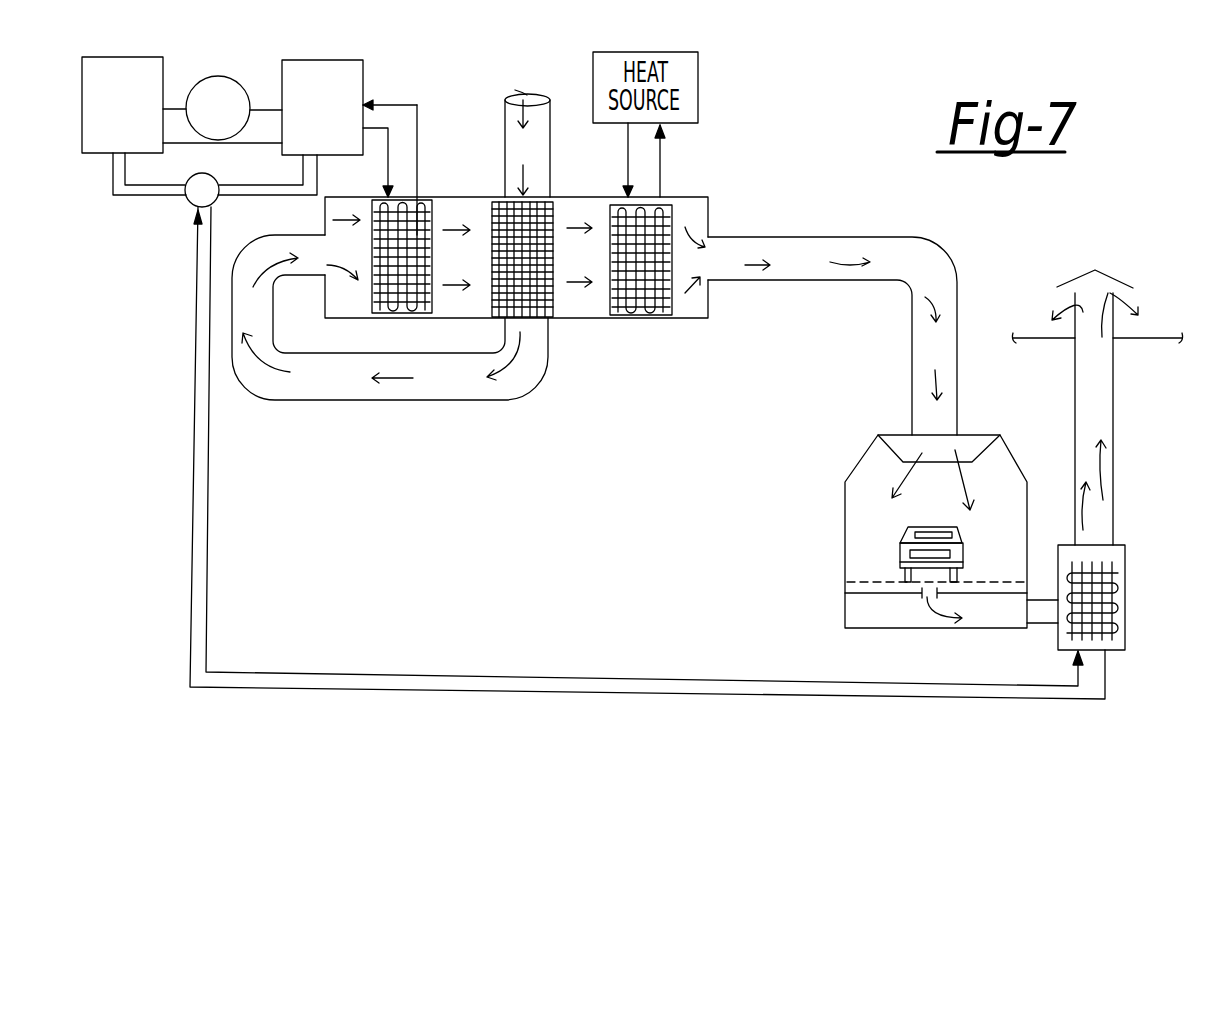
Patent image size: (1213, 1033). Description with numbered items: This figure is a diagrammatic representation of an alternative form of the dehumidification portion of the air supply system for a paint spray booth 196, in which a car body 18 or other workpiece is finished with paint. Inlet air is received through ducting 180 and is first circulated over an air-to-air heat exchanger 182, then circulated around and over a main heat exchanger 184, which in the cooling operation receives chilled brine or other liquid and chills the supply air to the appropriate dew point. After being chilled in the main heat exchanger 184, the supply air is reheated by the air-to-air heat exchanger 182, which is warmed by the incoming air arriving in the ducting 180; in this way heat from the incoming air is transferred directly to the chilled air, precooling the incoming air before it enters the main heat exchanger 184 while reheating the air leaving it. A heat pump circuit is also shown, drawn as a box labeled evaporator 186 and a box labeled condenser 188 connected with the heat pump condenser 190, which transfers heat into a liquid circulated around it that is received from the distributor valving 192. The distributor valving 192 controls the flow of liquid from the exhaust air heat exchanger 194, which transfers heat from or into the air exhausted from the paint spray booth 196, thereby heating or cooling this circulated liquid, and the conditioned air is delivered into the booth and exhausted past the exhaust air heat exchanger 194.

The car body 18 is at (958, 538).
The ducting 180 is at (505, 114).
The air-to-air heat exchanger 182 is at (553, 198).
The main heat exchanger 184 is at (432, 217).
The evaporator 186 is at (336, 60).
The condenser 188 is at (130, 57).
The heat pump condenser 190 is at (243, 62).
The distributor valving 192 is at (217, 178).
The exhaust air heat exchanger 194 is at (1057, 646).
The paint spray booth 196 is at (845, 497).